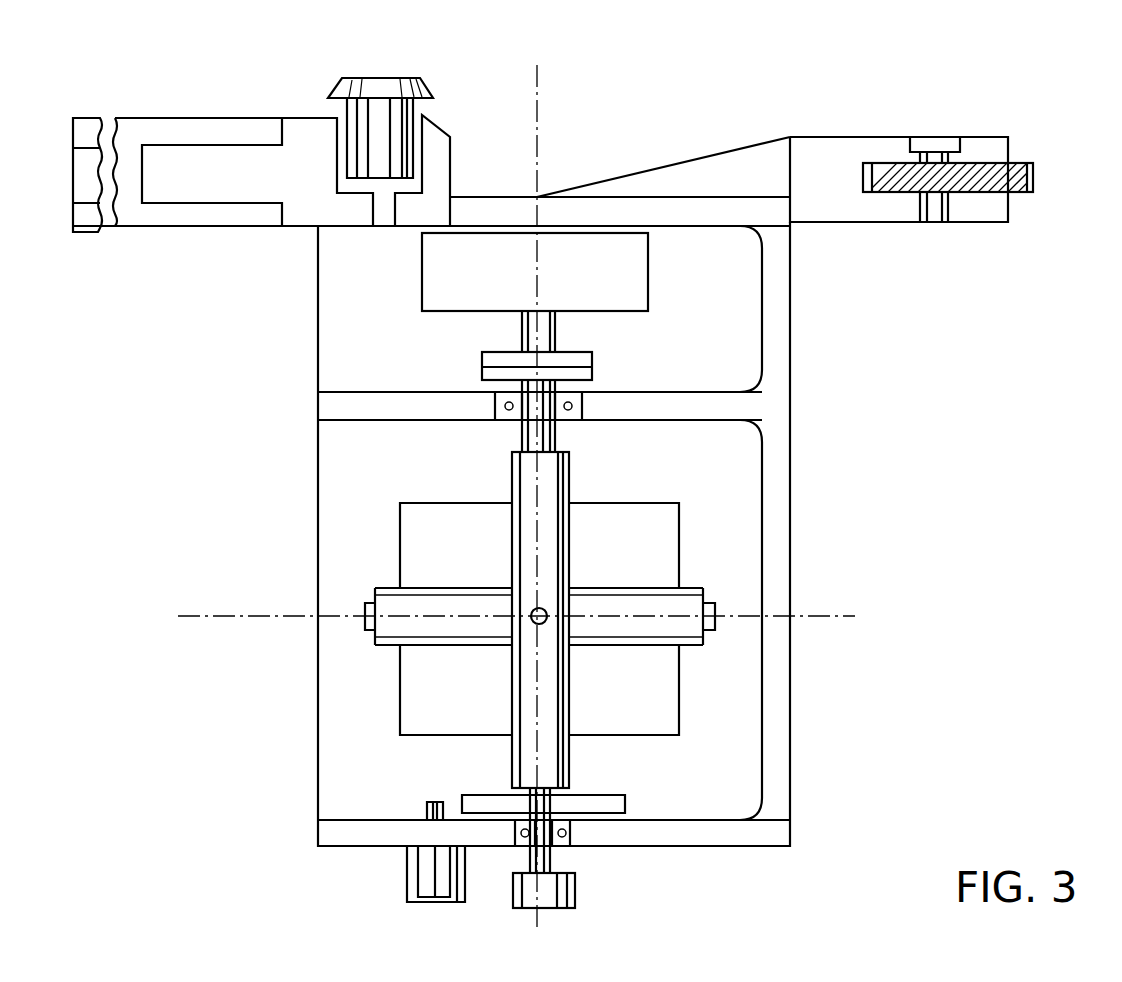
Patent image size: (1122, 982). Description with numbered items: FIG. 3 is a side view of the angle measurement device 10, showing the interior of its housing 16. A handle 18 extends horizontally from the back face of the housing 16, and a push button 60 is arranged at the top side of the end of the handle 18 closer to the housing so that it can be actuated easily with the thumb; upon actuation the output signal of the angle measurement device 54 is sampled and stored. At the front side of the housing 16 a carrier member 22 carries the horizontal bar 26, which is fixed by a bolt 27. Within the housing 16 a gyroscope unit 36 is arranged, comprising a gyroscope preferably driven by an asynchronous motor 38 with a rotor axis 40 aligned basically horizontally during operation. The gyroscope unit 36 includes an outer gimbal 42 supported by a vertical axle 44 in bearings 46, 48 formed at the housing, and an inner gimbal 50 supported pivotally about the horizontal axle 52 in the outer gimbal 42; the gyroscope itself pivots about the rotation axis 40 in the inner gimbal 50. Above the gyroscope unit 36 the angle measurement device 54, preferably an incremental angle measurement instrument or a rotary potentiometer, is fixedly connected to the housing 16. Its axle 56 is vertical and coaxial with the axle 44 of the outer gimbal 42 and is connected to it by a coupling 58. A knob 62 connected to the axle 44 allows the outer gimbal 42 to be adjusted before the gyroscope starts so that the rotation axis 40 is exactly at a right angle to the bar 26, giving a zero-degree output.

The angle measurement device 10 is at (306, 384).
The housing 16 is at (768, 405).
The handle 18 is at (185, 133).
The carrier member 22 is at (828, 163).
The bar 26 is at (1020, 165).
The bolt 27 is at (937, 140).
The gyroscope unit 36 is at (392, 693).
The asynchronous motor 38 is at (437, 533).
The rotor axis 40 is at (226, 617).
The outer gimbal 42 is at (553, 715).
The vertical axle 44 is at (553, 437).
The bearing 46 is at (583, 400).
The bearing 48 is at (570, 840).
The inner gimbal 50 is at (658, 603).
The horizontal axle 52 is at (544, 622).
The angle measurement device 54 is at (465, 276).
The axle 56 is at (545, 107).
The coupling 58 is at (500, 361).
The push button 60 is at (427, 87).
The knob 62 is at (573, 893).